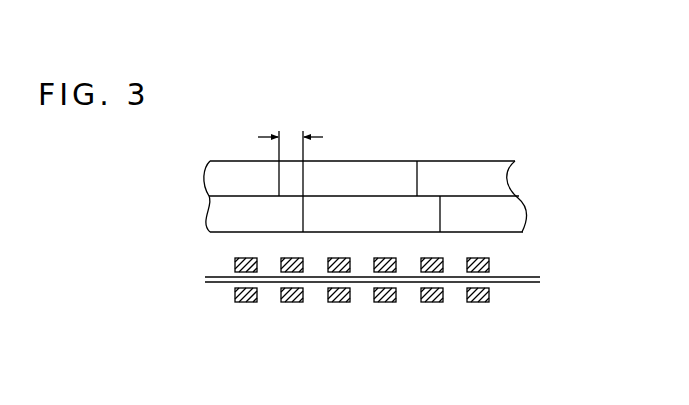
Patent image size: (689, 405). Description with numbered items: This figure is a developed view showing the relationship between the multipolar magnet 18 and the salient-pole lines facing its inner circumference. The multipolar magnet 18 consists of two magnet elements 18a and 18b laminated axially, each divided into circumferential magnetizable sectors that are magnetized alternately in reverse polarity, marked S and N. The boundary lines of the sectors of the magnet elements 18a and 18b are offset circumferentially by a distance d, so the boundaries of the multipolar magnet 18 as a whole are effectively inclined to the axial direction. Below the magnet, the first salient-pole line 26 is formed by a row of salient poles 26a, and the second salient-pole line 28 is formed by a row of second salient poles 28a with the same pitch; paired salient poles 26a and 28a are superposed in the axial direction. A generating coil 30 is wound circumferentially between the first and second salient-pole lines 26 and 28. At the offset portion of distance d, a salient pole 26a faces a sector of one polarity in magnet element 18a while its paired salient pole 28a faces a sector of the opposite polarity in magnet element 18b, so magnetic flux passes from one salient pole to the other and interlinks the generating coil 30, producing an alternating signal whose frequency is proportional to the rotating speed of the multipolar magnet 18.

The multipolar magnet 18 is at (393, 173).
The magnet element 18a is at (503, 176).
The magnet element 18b is at (510, 212).
The first salient-pole line 26 is at (362, 255).
The salient pole 26a is at (432, 258).
The second salient-pole line 28 is at (401, 319).
The second salient pole 28a is at (421, 303).
The generating coil 30 is at (210, 283).